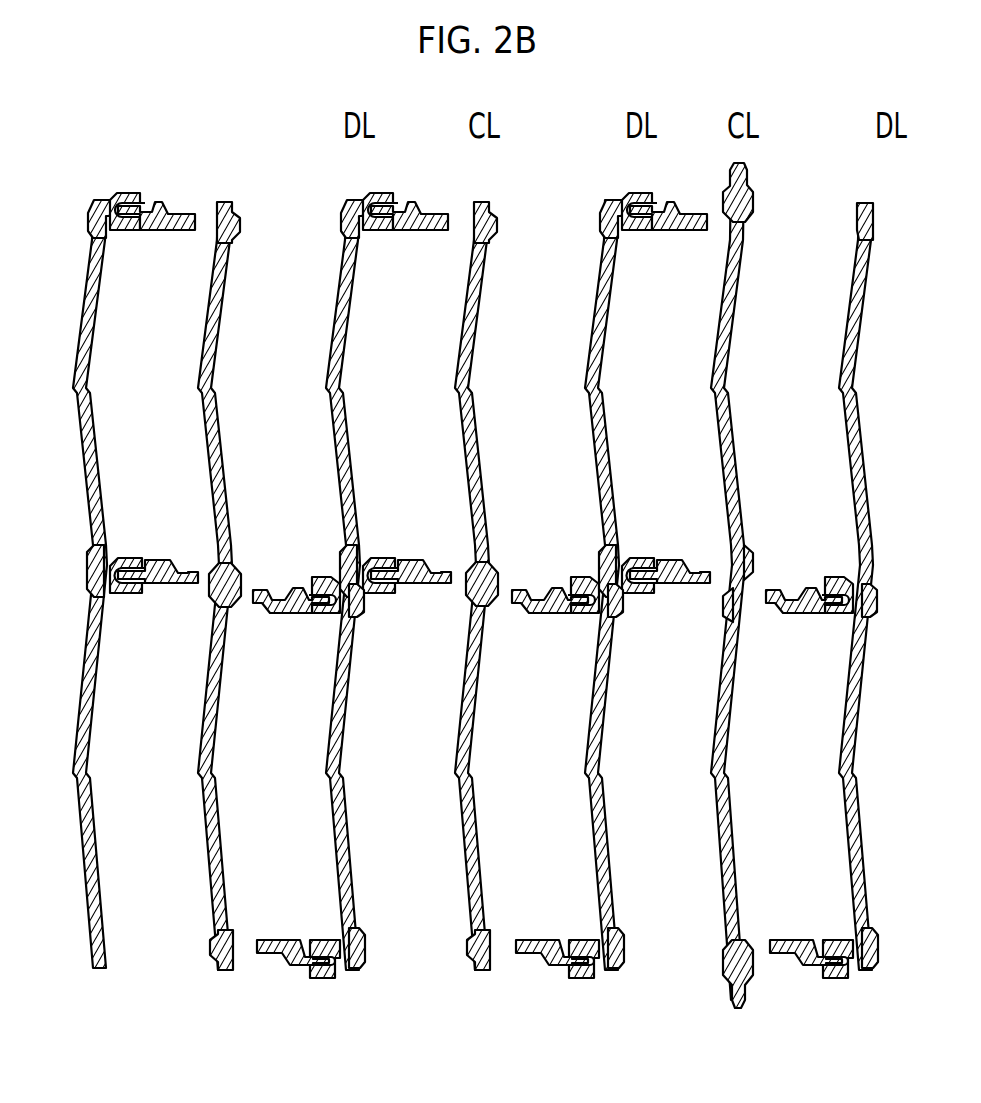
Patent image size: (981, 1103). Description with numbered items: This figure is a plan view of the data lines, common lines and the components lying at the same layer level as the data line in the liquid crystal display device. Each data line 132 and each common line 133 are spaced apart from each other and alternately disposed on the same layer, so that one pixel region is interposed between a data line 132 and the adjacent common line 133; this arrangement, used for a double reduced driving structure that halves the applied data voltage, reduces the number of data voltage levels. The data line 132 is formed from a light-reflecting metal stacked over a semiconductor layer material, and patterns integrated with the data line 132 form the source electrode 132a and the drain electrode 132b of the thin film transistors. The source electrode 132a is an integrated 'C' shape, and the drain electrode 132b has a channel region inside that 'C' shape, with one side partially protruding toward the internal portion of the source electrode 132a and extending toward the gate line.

The data line 132 is at (92, 212).
The source electrode 132a is at (126, 232).
The drain electrode 132b is at (136, 200).
The common line 133 is at (231, 204).